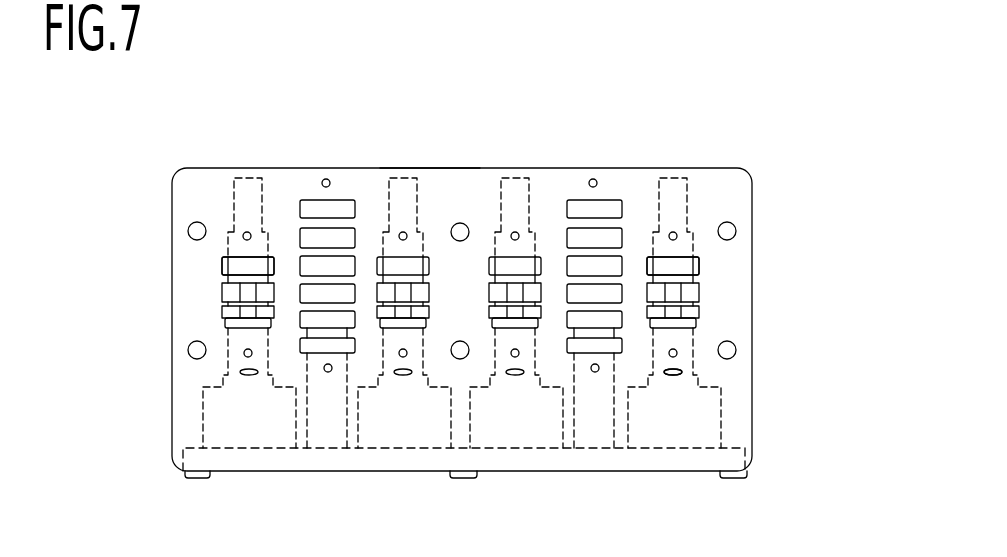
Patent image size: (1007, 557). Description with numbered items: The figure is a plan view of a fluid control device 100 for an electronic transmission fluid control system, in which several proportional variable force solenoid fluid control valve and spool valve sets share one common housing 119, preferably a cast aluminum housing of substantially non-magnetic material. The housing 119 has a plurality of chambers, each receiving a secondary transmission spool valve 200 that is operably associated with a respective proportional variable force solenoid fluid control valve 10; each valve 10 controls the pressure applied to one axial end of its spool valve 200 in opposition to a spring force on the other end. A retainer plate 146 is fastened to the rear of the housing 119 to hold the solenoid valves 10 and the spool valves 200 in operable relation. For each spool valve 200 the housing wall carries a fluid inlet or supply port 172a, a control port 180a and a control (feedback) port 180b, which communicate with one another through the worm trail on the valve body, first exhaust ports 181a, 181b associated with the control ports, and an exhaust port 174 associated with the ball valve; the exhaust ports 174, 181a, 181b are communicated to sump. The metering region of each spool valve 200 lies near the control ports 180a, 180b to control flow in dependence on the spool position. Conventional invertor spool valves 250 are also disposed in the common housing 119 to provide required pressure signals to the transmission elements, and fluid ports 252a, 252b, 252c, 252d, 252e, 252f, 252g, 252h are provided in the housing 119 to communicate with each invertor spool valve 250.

The fluid control device 100 is at (505, 155).
The proportional variable force solenoid fluid control valve 10 is at (190, 432).
The housing 119 is at (427, 168).
The retainer plate 146 is at (613, 465).
The invertor spool valve 250 is at (318, 436).
The control port 180a is at (245, 231).
The control (feedback) port 180b is at (226, 258).
The secondary transmission spool valve 200 is at (223, 265).
The first exhaust port 181a is at (230, 314).
The first exhaust port 181b is at (277, 288).
The fluid inlet or supply port 172a is at (244, 354).
The exhaust port 174 is at (240, 372).
The fluid port 252a is at (328, 372).
The fluid port 252b is at (567, 353).
The fluid port 252c is at (566, 320).
The fluid port 252d is at (623, 293).
The fluid port 252e is at (623, 258).
The fluid port 252f is at (623, 236).
The fluid port 252g is at (566, 218).
The fluid port 252h is at (327, 179).